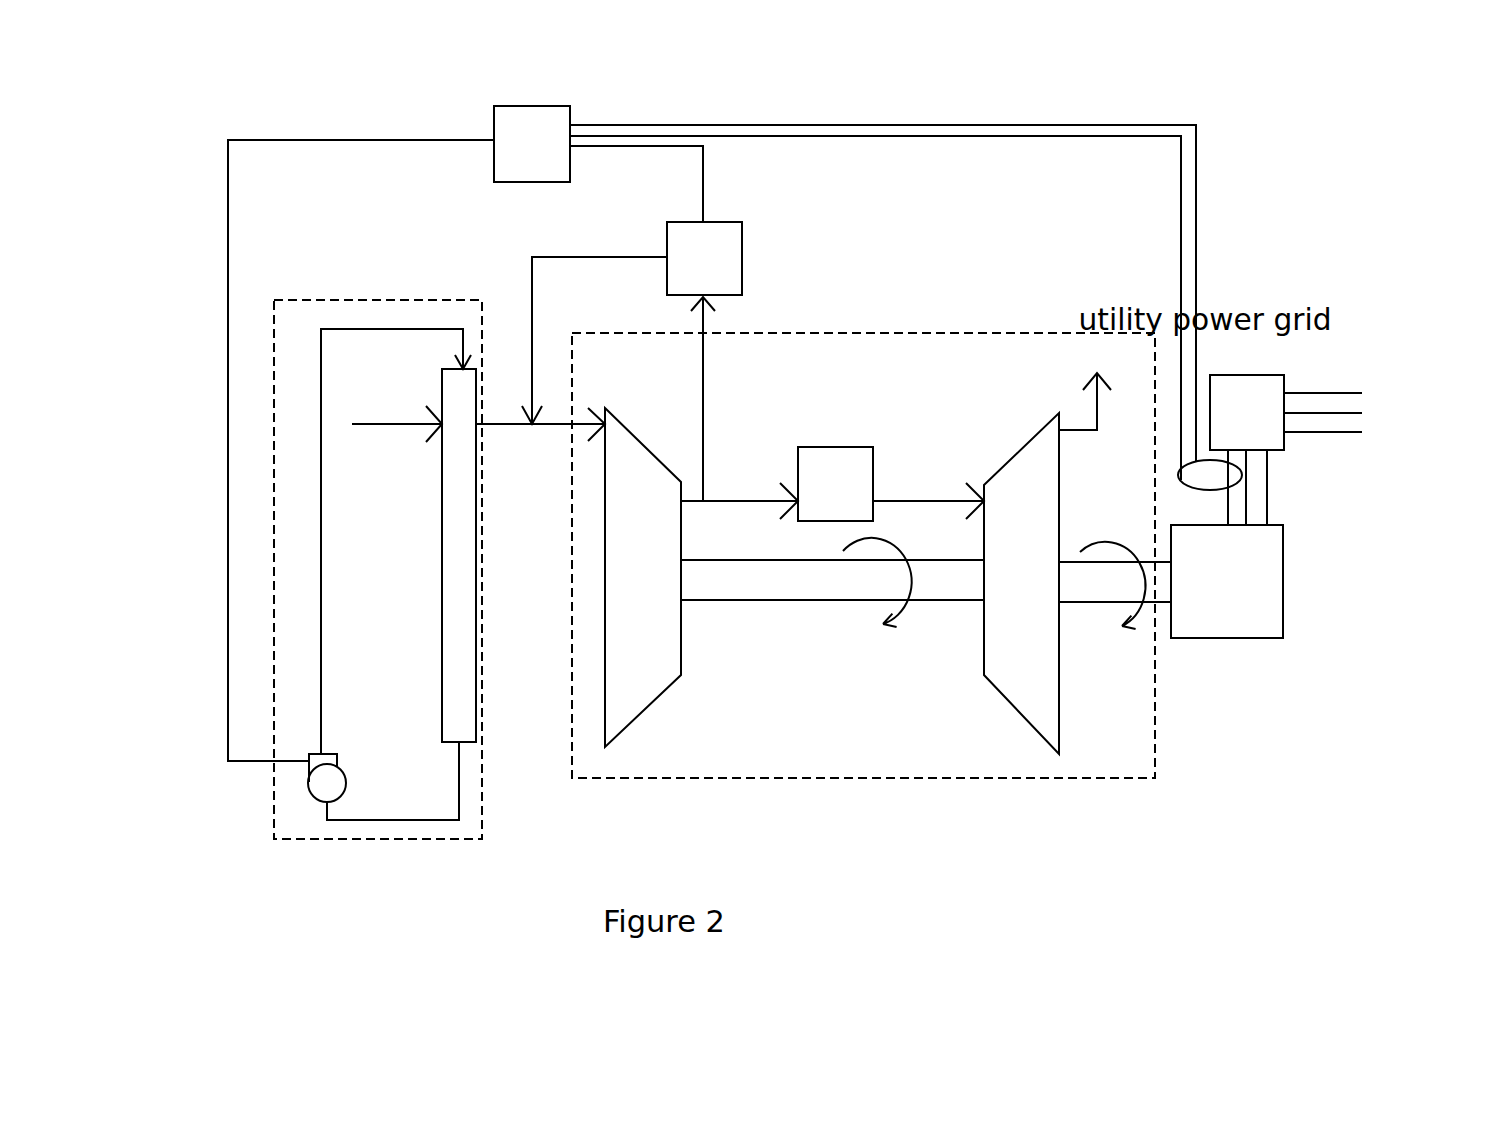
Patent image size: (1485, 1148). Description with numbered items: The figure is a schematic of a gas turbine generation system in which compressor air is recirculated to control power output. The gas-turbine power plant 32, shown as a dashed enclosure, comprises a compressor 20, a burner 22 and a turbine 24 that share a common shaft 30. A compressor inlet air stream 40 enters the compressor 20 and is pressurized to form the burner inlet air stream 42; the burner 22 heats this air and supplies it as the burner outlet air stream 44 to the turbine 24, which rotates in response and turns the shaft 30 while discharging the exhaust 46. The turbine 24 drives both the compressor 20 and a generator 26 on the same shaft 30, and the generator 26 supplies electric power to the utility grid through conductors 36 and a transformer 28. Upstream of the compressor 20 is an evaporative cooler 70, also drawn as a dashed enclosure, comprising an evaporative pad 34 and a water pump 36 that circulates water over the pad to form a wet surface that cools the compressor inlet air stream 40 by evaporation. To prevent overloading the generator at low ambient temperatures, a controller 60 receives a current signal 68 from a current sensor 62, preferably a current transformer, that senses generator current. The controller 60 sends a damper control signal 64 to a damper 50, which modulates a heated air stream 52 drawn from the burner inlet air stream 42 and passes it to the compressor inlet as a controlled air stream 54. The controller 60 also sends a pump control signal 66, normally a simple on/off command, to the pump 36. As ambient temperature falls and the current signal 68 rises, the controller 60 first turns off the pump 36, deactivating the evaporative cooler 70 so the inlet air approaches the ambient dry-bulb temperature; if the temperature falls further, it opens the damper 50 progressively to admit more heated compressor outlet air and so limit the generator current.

The compressor 20 is at (626, 548).
The burner 22 is at (817, 508).
The turbine 24 is at (1014, 584).
The generator 26 is at (1200, 606).
The transformer 28 is at (1229, 436).
The shaft 30 is at (831, 575).
The gas-turbine power plant 32 is at (752, 333).
The evaporative pad 34 is at (453, 594).
The water pump 36 is at (340, 778).
The compressor inlet air stream 40 is at (582, 423).
The burner inlet air stream 42 is at (739, 499).
The burner outlet air stream 44 is at (912, 502).
The exhaust 46 is at (1093, 432).
The damper 50 is at (686, 281).
The heated air stream 52 is at (705, 405).
The controlled air stream 54 is at (563, 256).
The controller 60 is at (514, 161).
The current sensor 62 is at (1201, 490).
The damper control signal 64 is at (703, 200).
The pump control signal 66 is at (362, 142).
The current signal 68 is at (920, 137).
The evaporative cooler 70 is at (481, 791).